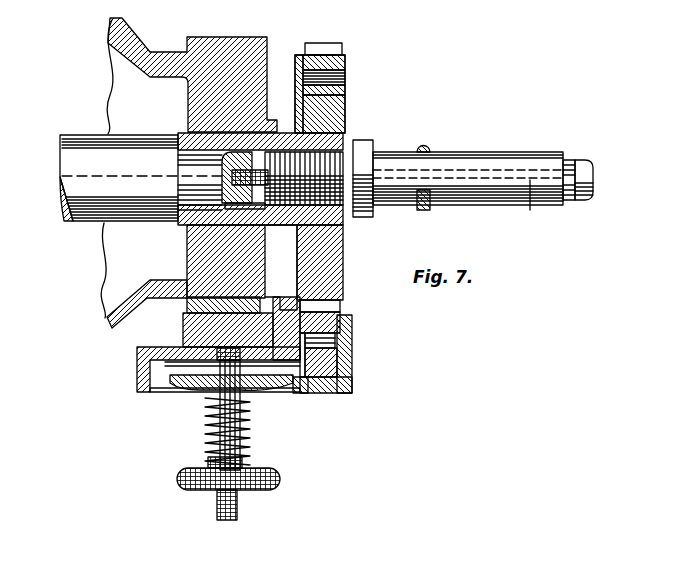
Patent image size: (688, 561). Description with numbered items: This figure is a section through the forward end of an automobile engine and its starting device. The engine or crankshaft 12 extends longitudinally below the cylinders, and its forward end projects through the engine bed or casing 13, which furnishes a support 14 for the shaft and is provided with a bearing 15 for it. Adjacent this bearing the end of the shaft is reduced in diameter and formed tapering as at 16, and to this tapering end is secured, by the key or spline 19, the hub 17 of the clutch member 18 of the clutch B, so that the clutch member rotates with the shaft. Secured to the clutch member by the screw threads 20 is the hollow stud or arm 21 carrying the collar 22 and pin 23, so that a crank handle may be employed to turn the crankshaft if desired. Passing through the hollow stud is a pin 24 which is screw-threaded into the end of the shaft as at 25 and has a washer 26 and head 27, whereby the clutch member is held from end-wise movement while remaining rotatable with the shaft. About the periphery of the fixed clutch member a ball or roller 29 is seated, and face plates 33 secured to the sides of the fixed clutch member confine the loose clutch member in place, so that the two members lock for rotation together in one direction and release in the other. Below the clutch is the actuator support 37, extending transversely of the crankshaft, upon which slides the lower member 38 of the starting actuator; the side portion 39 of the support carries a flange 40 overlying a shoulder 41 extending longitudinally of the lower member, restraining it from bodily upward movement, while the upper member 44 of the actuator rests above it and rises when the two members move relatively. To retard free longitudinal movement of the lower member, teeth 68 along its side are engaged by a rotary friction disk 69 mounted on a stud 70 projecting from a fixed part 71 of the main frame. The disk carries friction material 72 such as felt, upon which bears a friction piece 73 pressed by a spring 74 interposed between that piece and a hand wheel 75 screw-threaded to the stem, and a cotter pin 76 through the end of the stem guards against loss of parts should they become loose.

The engine or crankshaft 12 is at (72, 172).
The engine bed or casing 13 is at (108, 322).
The support 14 is at (193, 88).
The bearing 15 is at (186, 234).
The tapering end 16 is at (187, 163).
The hub 17 is at (281, 142).
The clutch member 18 is at (330, 107).
The key or spline 19 is at (236, 118).
The screw threads 20 is at (340, 212).
The hollow stud or arm 21 is at (455, 151).
The collar 22 is at (370, 150).
The pin 23 is at (428, 146).
The pin 24 is at (536, 205).
The screw-threaded connection 25 is at (192, 130).
The washer 26 is at (566, 158).
The head 27 is at (595, 172).
The ball or roller 29 is at (347, 79).
The face plates 33 is at (298, 66).
The clutch B is at (345, 58).
The actuator support 37 is at (352, 388).
The lower member of the actuator 38 is at (330, 385).
The side portion 39 is at (353, 333).
The flange 40 is at (335, 347).
The shoulder 41 is at (337, 368).
The upper member of the actuator 44 is at (330, 320).
The teeth 68 is at (303, 375).
The rotary friction disk 69 is at (166, 380).
The stud 70 is at (210, 390).
The fixed part of the main frame 71 is at (148, 350).
The friction material 72 is at (181, 356).
The friction piece 73 is at (180, 388).
The spring 74 is at (248, 437).
The hand wheel 75 is at (180, 487).
The cotter pin 76 is at (228, 510).